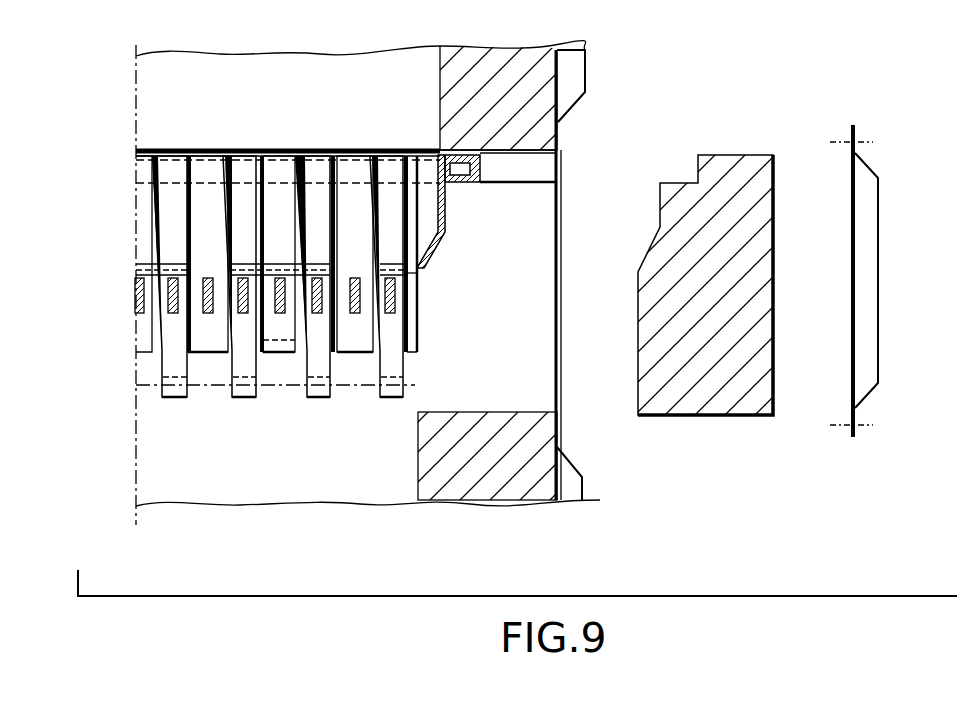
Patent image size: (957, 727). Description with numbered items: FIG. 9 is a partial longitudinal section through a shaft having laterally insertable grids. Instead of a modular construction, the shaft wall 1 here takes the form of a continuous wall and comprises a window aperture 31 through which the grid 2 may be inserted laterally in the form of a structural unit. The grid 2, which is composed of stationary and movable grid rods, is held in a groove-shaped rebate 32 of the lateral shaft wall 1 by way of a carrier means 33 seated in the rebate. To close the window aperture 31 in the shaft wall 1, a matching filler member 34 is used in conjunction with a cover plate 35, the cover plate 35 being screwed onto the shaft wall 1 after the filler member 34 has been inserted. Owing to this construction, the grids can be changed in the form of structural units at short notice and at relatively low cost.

The shaft wall 1 is at (490, 478).
The grid 2 is at (438, 248).
The window aperture 31 is at (556, 344).
The groove-shaped rebate 32 is at (522, 163).
The carrier means 33 is at (460, 183).
The filler member 34 is at (713, 392).
The cover plate 35 is at (863, 363).